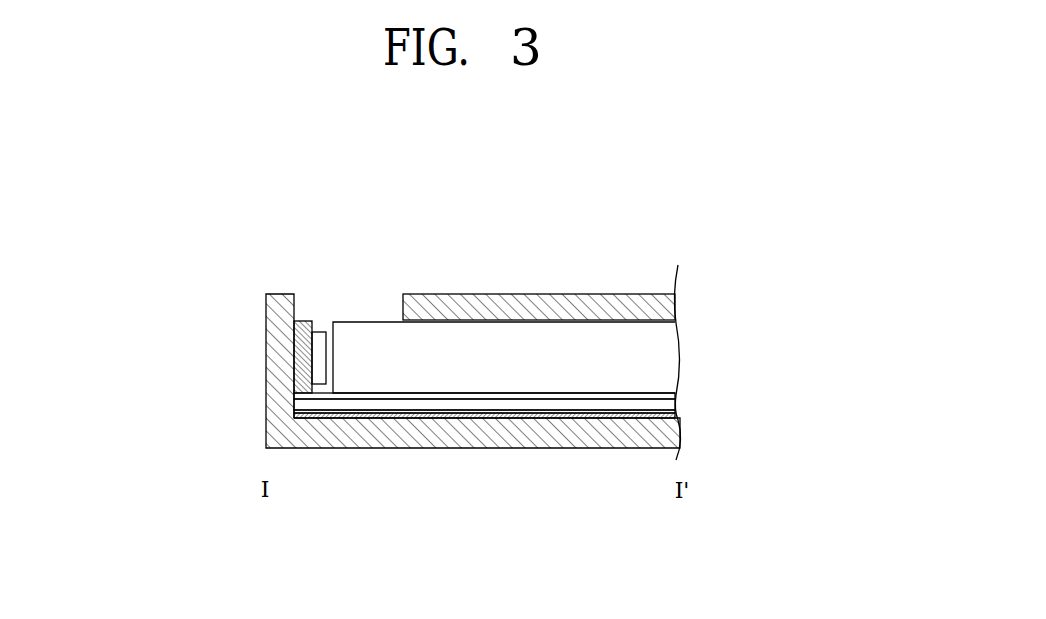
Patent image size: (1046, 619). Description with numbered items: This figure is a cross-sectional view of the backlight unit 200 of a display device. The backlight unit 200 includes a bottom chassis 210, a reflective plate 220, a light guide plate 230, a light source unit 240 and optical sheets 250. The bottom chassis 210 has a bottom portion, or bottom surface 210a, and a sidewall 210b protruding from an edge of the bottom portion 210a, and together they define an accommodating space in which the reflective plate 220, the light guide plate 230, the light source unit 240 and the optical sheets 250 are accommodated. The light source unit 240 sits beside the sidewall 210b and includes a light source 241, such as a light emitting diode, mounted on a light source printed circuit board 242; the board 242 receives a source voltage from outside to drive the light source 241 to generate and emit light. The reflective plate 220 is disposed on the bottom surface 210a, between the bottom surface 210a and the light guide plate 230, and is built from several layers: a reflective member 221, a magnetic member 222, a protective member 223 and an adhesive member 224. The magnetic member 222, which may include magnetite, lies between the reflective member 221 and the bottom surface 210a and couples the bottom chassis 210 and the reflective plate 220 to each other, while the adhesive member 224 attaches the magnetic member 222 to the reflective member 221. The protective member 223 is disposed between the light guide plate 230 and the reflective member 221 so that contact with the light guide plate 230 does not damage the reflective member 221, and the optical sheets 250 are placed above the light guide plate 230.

The backlight unit 200 is at (612, 222).
The bottom chassis 210 is at (157, 380).
The bottom portion 210a is at (356, 437).
The sidewall 210b is at (272, 382).
The reflective plate 220 is at (410, 513).
The reflective member 221 is at (530, 406).
The magnetic member 222 is at (428, 419).
The protective member 223 is at (583, 397).
The adhesive member 224 is at (481, 412).
The light guide plate 230 is at (665, 348).
The light source unit 240 is at (297, 225).
The light source 241 is at (322, 340).
The light source printed circuit board 242 is at (303, 328).
The optical sheets 250 is at (668, 306).